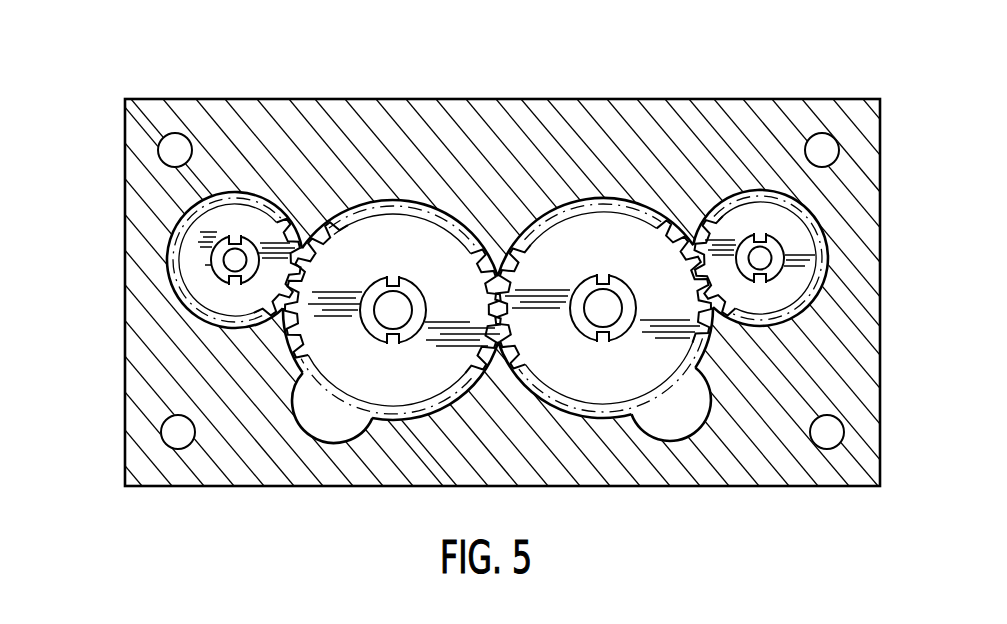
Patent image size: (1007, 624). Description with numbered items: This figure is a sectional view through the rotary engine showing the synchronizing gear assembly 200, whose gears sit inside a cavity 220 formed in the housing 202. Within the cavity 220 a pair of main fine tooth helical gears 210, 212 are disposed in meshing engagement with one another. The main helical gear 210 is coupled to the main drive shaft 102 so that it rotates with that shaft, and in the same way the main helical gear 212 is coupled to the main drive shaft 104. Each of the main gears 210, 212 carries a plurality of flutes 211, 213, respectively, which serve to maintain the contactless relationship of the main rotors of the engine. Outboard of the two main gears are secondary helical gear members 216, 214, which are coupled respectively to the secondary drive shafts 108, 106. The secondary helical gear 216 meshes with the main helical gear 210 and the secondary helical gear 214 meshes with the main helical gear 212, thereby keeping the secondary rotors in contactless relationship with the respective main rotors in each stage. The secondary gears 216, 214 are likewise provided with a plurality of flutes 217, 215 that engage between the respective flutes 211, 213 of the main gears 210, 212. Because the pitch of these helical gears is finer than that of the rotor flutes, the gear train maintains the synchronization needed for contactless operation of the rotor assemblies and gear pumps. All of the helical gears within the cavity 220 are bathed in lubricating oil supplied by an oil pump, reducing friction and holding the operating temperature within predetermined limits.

The synchronizing gear assembly 200 is at (858, 92).
The housing 202 is at (873, 176).
The main fine tooth helical gear 210 is at (417, 386).
The main fine tooth helical gear 212 is at (628, 388).
The main drive shaft 102 is at (418, 298).
The main drive shaft 104 is at (624, 300).
The secondary helical gear member 216 is at (210, 294).
The secondary helical gear member 214 is at (798, 283).
The secondary drive shaft 108 is at (214, 254).
The secondary drive shaft 106 is at (785, 259).
The flutes 217 is at (293, 237).
The flutes 215 is at (707, 227).
The flutes 213 is at (507, 233).
The cavity 220 is at (497, 233).
The flutes 211 is at (462, 381).